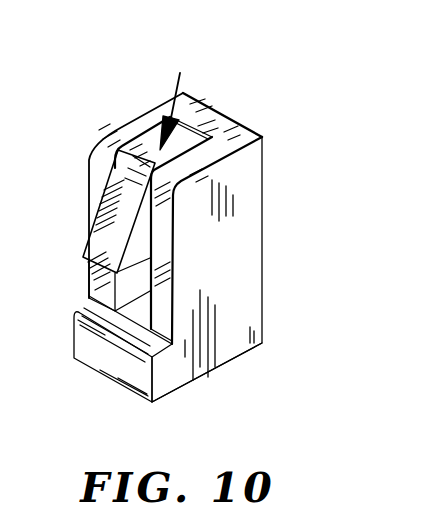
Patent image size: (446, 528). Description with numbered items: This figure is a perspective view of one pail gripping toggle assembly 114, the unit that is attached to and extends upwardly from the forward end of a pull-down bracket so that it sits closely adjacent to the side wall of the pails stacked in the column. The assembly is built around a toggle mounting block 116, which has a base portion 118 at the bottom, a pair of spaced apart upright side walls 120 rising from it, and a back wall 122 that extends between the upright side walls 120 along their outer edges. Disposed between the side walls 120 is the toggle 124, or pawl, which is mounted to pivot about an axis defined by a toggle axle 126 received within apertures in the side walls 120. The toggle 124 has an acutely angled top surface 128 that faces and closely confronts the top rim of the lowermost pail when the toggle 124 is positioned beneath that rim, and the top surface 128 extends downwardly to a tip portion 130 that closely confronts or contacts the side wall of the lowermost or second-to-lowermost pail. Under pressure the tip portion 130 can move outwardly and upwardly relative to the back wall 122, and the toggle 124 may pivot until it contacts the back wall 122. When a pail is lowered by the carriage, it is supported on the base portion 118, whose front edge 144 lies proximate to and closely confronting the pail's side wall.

The pail gripping toggle assembly 114 is at (262, 137).
The toggle mounting block 116 is at (233, 306).
The base portion 118 is at (170, 377).
The upright side walls 120 is at (128, 131).
The back wall 122 is at (217, 122).
The toggle 124 is at (180, 100).
The toggle axle 126 is at (214, 241).
The angled top surface 128 is at (107, 242).
The tip portion 130 is at (93, 284).
The front edge 144 is at (113, 364).